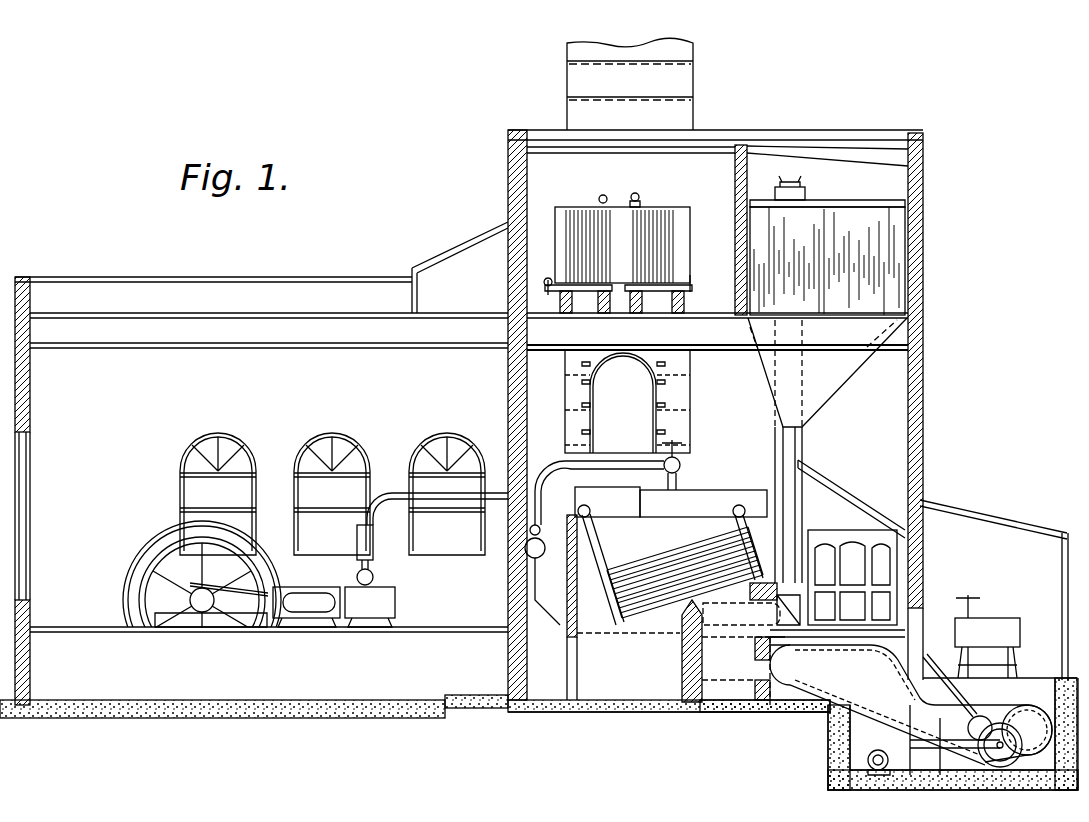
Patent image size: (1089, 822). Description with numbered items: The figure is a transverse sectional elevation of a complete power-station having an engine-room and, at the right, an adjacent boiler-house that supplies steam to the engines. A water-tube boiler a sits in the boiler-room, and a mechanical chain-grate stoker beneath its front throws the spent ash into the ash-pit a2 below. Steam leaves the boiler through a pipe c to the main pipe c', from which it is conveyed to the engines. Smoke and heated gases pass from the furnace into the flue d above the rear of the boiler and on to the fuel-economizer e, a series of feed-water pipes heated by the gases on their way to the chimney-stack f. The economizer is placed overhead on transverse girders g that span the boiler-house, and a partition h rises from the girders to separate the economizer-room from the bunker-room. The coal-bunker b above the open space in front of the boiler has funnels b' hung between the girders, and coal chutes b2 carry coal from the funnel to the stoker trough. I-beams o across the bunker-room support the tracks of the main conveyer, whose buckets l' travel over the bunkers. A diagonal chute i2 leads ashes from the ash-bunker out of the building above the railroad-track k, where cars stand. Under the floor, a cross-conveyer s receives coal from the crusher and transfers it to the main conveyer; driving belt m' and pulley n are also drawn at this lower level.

The chimney-stack f is at (630, 84).
The fuel-economizer e is at (630, 253).
The partition h is at (747, 185).
The transverse beam or girder g is at (612, 338).
The flue d is at (627, 401).
The pipe c is at (623, 482).
The main pipe c' is at (545, 573).
The boiler a is at (667, 593).
The ash-pit a2 is at (688, 644).
The bin b is at (827, 261).
The I-beam o is at (840, 206).
The bucket l' is at (799, 180).
The funnel b' is at (827, 372).
The coal chute or pipe b2 is at (786, 515).
The chute or pipe i2 is at (848, 500).
The railroad-track k is at (1022, 665).
The cross-conveyer s is at (911, 701).
The driving belt m' is at (950, 679).
The pulley n is at (960, 740).